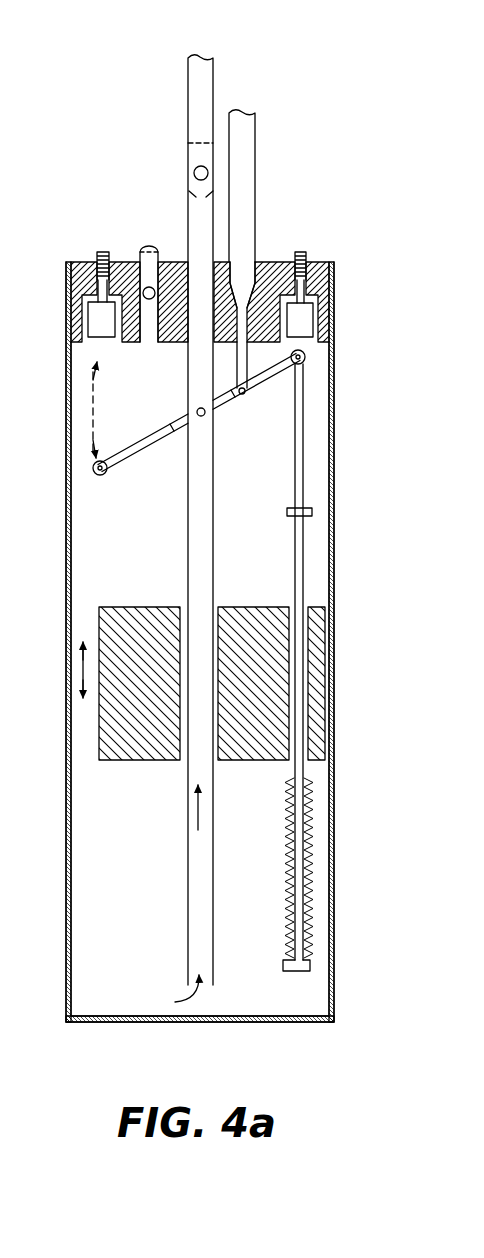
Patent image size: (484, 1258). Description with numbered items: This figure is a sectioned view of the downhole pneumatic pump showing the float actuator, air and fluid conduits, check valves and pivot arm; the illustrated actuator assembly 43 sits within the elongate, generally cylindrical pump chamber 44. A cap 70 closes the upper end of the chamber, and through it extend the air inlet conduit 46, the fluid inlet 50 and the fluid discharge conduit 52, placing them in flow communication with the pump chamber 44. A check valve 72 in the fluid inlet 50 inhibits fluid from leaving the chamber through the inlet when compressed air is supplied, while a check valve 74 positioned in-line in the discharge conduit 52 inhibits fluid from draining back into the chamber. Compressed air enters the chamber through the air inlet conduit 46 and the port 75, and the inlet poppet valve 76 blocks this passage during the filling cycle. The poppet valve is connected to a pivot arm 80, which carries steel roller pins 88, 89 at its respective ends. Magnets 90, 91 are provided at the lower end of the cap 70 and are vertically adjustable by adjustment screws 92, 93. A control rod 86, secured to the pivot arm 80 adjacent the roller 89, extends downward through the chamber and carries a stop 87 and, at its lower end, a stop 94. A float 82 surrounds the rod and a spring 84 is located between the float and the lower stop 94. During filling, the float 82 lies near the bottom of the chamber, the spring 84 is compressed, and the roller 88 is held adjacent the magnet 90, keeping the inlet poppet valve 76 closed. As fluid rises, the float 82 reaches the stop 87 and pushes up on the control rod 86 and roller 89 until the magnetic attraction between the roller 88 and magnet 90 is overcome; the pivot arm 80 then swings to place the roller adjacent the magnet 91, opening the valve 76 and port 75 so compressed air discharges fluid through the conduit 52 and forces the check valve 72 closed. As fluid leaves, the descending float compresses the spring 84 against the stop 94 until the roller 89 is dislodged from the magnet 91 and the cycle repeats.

The actuator assembly 43 is at (204, 642).
The pump chamber 44 is at (330, 913).
The air inlet conduit 46 is at (256, 134).
The fluid inlet 50 is at (148, 246).
The fluid discharge conduit 52 is at (207, 62).
The cap 70 is at (272, 262).
The check valve 72 is at (146, 301).
The check valve 74 is at (198, 156).
The port 75 is at (249, 322).
The inlet poppet valve 76 is at (242, 287).
The pivot arm 80 is at (142, 453).
The float 82 is at (142, 612).
The spring 84 is at (288, 856).
The control rod 86 is at (305, 441).
The stop 87 is at (312, 511).
The steel roller pin 88 is at (100, 477).
The steel roller pin 89 is at (306, 355).
The magnet 90 is at (97, 320).
The magnet 91 is at (305, 322).
The adjustment screw 92 is at (95, 258).
The adjustment screw 93 is at (308, 256).
The stop 94 is at (293, 973).